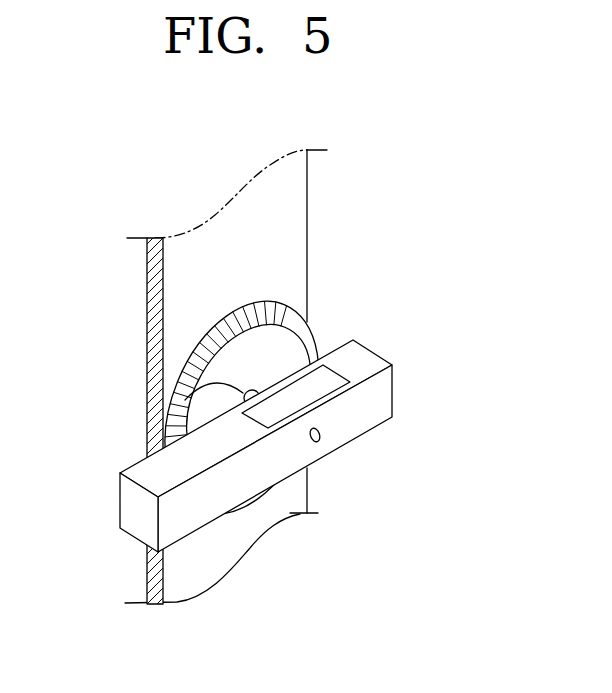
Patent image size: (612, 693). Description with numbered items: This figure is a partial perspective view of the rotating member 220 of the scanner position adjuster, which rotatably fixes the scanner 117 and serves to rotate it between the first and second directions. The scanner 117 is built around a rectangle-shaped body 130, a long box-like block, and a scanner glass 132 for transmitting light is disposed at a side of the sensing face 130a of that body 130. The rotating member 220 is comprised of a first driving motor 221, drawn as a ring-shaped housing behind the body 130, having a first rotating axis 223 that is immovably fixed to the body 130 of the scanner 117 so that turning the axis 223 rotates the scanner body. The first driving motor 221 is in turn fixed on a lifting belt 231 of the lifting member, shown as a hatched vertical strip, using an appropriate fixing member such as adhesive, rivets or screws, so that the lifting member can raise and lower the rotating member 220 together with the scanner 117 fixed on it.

The scanner 117 is at (322, 472).
The rectangle-shaped body 130 is at (248, 483).
The sensing face 130a is at (372, 360).
The scanner glass 132 is at (325, 387).
The rotating member 220 is at (320, 312).
The first driving motor 221 is at (318, 357).
The first rotating axis 223 is at (147, 432).
The lifting belt 231 is at (175, 303).